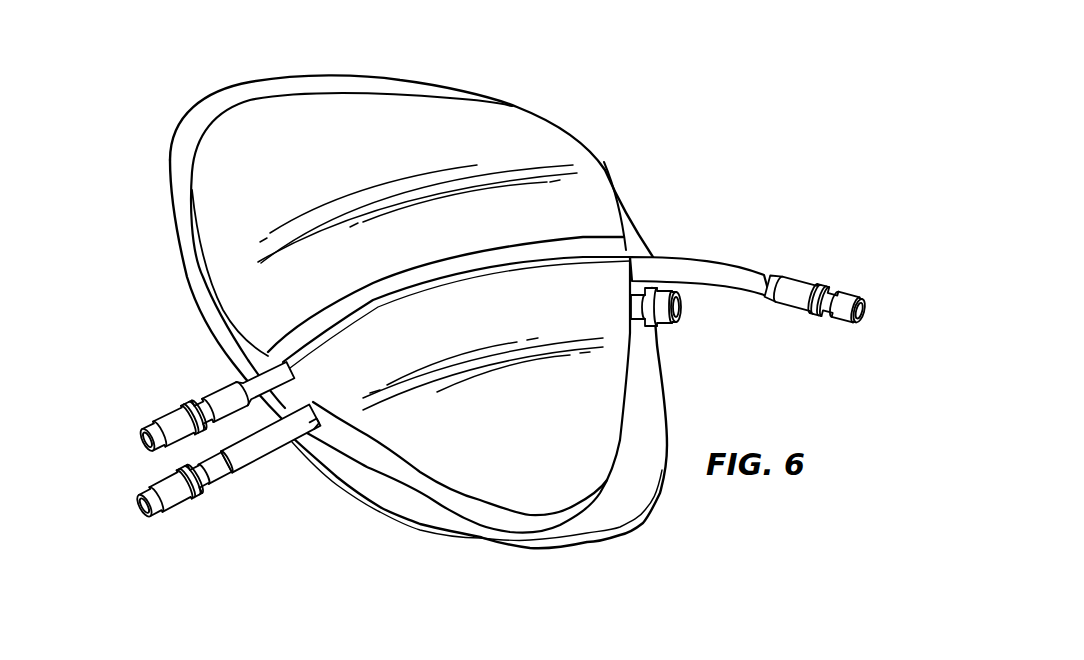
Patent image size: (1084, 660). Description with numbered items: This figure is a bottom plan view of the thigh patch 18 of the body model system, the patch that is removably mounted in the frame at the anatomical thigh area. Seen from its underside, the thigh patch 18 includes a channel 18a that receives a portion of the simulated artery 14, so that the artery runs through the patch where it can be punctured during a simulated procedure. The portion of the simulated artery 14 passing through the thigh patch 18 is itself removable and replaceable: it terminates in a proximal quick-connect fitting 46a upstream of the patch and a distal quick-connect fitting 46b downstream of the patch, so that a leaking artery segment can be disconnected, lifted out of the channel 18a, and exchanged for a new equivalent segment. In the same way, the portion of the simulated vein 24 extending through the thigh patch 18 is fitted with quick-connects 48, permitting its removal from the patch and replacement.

The thigh patch 18 is at (398, 76).
The channel 18a is at (615, 247).
The simulated artery 14 is at (700, 262).
The distal quick-connect fitting 46b is at (846, 292).
The quick-connects 48 is at (658, 323).
The proximal quick-connect fitting 46a is at (152, 422).
The simulated vein 24 is at (263, 442).